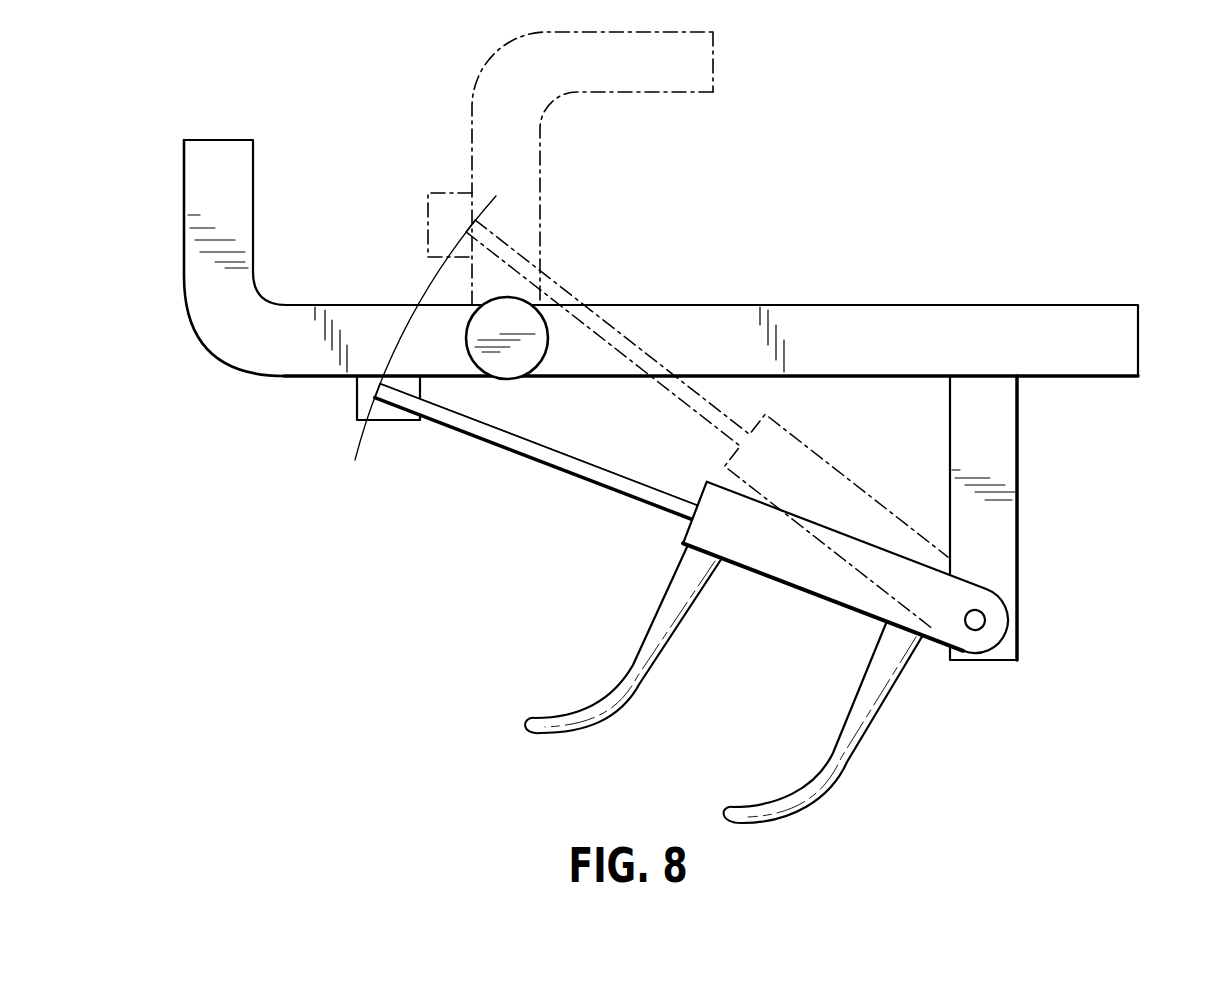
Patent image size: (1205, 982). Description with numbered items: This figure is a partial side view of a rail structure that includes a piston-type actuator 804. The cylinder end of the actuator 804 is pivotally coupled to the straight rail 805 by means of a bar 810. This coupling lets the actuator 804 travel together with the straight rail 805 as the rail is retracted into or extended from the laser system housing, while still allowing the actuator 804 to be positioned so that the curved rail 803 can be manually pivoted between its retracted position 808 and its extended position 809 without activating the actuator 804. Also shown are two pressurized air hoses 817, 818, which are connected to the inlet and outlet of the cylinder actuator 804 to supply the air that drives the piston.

The curved rail 803 is at (570, 168).
The actuator 804 is at (687, 545).
The straight rail 805 is at (711, 362).
The retracted position 808 is at (713, 53).
The extended position 809 is at (255, 178).
The bar 810 is at (1017, 508).
The pressurized air hose 817 is at (627, 683).
The pressurized air hose 818 is at (837, 760).